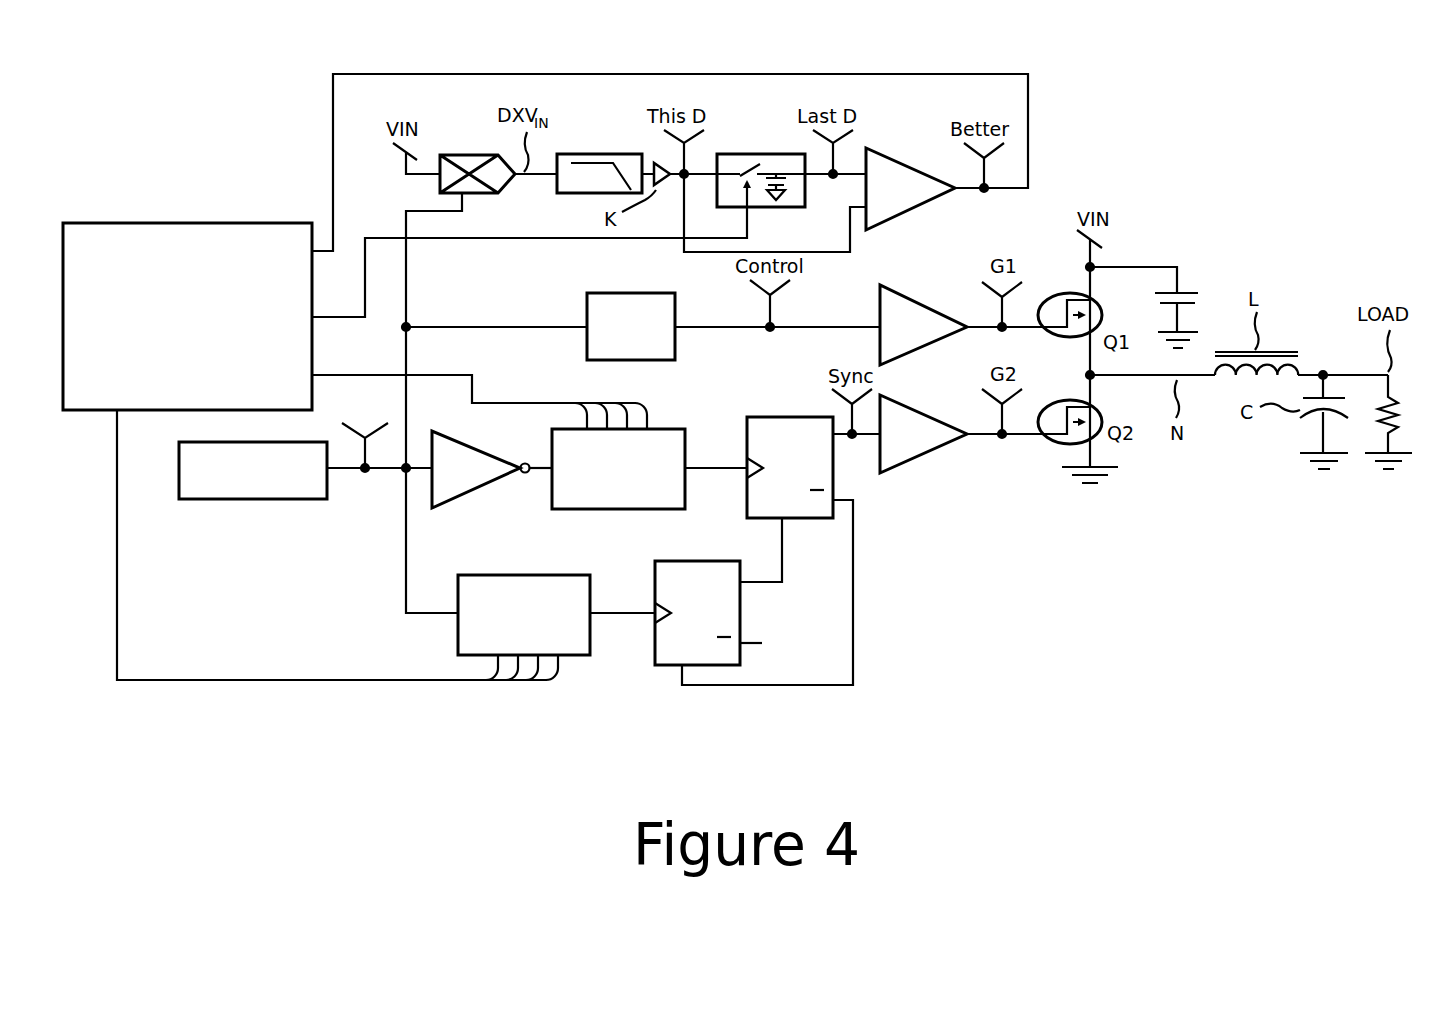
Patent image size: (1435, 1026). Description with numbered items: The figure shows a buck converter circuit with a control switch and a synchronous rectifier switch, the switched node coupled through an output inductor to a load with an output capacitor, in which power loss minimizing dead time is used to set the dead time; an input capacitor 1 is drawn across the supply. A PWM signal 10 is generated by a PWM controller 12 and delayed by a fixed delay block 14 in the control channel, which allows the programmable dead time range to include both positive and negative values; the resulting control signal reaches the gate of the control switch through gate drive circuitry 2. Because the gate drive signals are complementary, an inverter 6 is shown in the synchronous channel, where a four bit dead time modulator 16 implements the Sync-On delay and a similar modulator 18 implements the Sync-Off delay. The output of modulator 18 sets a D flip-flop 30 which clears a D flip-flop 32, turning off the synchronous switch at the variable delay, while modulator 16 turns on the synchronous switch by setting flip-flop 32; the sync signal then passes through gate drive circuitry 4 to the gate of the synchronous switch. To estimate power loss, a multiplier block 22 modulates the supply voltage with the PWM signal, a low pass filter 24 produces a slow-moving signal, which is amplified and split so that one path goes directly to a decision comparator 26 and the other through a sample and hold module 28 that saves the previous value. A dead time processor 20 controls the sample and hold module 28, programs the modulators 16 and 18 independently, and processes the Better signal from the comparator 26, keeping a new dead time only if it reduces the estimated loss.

The dead time processor 20 is at (186, 222).
The multiplier block 22 is at (465, 153).
The low pass filter 24 is at (588, 153).
The sample and hold module 28 is at (752, 153).
The decision comparator 26 is at (904, 146).
The fixed delay block 14 is at (585, 302).
The 4 bit dead time modulator 16 is at (670, 428).
The dead time modulator 18 is at (580, 658).
The gate drive circuitry 2 is at (920, 301).
The gate drive circuitry 4 is at (920, 411).
The inverter 6 is at (480, 486).
The PWM signal 10 is at (363, 474).
The PWM controller 12 is at (253, 500).
The D flip-flop 30 is at (742, 626).
The D flip-flop 32 is at (835, 488).
The input capacitor 1 is at (1152, 307).